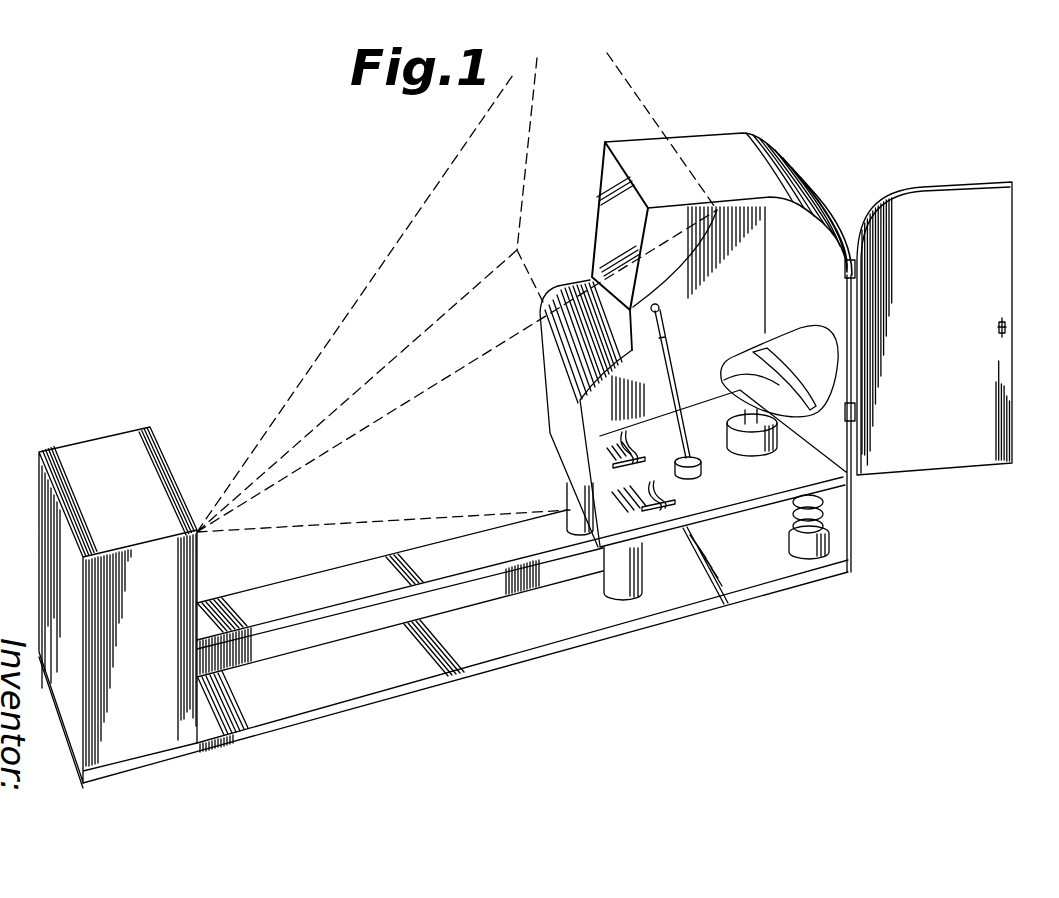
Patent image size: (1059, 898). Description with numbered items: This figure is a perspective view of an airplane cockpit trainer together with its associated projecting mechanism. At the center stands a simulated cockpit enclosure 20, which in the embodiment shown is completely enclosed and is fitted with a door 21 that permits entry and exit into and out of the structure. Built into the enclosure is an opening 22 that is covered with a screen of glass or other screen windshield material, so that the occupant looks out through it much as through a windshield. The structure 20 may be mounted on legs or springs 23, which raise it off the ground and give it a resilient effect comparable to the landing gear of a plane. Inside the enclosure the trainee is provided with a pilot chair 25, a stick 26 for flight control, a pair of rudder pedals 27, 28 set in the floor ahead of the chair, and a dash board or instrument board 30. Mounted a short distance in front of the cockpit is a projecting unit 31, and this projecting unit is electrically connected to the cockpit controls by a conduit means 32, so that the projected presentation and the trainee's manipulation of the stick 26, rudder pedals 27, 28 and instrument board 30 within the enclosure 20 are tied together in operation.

The simulated cockpit enclosure 20 is at (760, 143).
The door 21 is at (938, 462).
The opening 22 is at (597, 219).
The legs or springs 23 is at (640, 587).
The pilot chair 25 is at (807, 332).
The stick 26 is at (670, 355).
The rudder pedal 27 is at (632, 452).
The rudder pedal 28 is at (658, 500).
The dash board or instrument board 30 is at (658, 309).
The projecting unit 31 is at (116, 445).
The conduit means 32 is at (465, 630).